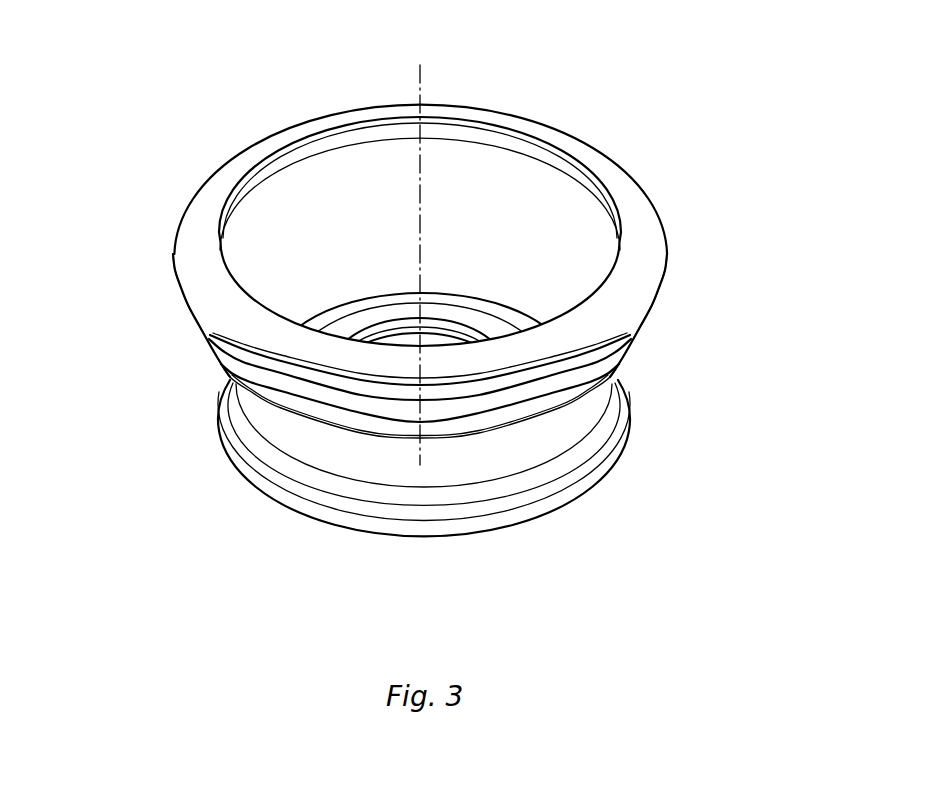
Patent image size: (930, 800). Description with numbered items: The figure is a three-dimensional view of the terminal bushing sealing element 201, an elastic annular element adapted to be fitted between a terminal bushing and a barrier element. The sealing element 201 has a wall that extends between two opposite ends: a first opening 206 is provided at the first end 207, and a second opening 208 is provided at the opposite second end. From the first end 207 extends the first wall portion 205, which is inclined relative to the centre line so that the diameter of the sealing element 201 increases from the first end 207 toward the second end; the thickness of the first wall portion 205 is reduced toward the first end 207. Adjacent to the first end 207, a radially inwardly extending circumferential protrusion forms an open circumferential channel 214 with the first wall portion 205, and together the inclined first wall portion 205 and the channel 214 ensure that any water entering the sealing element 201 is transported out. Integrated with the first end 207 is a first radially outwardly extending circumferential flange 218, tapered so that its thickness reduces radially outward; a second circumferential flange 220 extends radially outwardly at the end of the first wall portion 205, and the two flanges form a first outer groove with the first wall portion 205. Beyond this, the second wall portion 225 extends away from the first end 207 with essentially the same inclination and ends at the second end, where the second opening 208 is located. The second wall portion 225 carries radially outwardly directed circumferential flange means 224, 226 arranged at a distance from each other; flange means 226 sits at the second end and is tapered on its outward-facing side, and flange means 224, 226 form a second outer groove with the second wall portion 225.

The terminal bushing sealing element 201 is at (688, 134).
The first wall portion 205 is at (270, 428).
The first opening 206 is at (413, 543).
The first end 207 is at (258, 492).
The second opening 208 is at (480, 172).
The open circumferential channel 214 is at (316, 323).
The first radially outwardly extending circumferential flange 218 is at (488, 516).
The second circumferential flange 220 is at (630, 355).
The flange means 224 is at (650, 312).
The second wall portion 225 is at (275, 383).
The flange means 226 is at (647, 239).